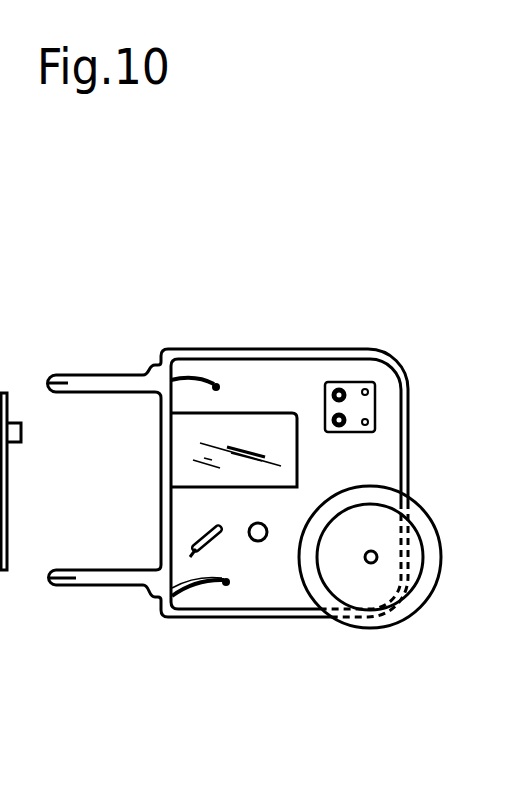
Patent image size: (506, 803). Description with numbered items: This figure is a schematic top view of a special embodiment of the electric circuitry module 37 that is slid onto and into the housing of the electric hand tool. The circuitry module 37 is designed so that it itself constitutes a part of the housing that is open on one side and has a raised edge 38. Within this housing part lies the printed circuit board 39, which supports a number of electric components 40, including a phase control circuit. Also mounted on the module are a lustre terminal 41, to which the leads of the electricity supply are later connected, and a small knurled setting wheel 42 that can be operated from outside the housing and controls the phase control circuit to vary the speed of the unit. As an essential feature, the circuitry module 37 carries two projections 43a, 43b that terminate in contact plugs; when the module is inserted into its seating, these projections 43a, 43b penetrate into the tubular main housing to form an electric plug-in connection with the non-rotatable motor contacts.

The electric circuitry module 37 is at (258, 345).
The raised edge 38 is at (331, 350).
The printed circuit board 39 is at (235, 373).
The electric components 40 is at (250, 523).
The lustre terminal 41 is at (368, 402).
The knurled setting wheel 42 is at (418, 517).
The projection 43a is at (77, 380).
The projection 43b is at (80, 585).